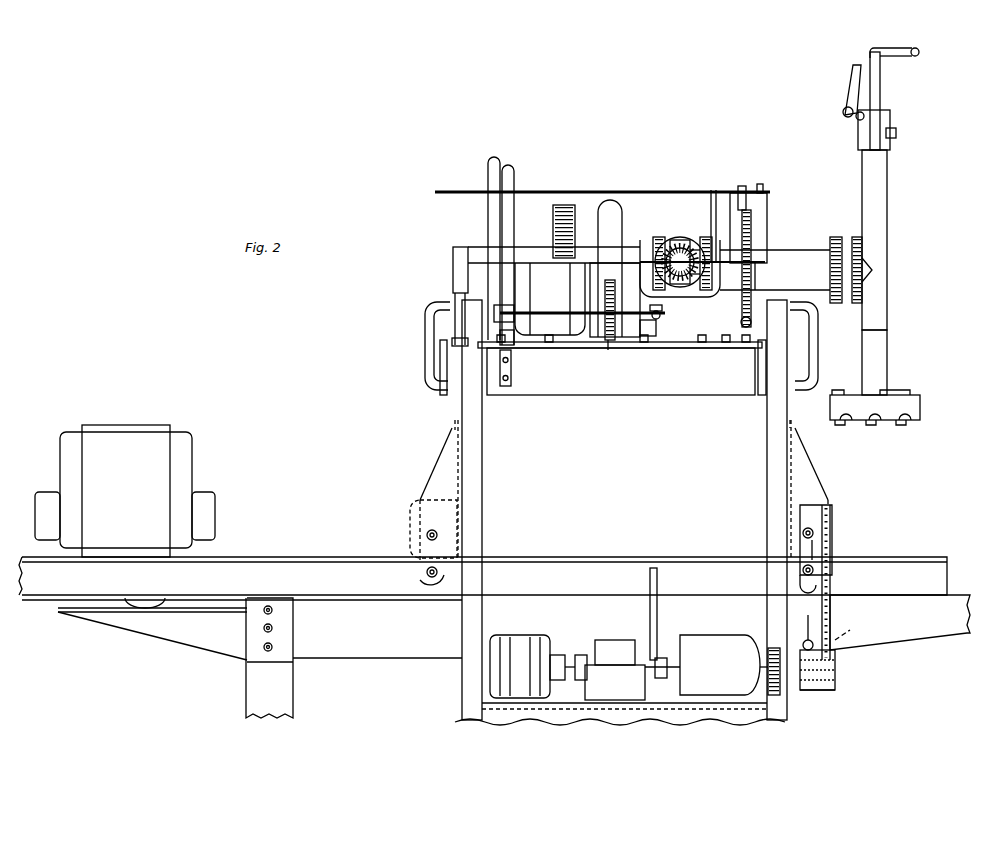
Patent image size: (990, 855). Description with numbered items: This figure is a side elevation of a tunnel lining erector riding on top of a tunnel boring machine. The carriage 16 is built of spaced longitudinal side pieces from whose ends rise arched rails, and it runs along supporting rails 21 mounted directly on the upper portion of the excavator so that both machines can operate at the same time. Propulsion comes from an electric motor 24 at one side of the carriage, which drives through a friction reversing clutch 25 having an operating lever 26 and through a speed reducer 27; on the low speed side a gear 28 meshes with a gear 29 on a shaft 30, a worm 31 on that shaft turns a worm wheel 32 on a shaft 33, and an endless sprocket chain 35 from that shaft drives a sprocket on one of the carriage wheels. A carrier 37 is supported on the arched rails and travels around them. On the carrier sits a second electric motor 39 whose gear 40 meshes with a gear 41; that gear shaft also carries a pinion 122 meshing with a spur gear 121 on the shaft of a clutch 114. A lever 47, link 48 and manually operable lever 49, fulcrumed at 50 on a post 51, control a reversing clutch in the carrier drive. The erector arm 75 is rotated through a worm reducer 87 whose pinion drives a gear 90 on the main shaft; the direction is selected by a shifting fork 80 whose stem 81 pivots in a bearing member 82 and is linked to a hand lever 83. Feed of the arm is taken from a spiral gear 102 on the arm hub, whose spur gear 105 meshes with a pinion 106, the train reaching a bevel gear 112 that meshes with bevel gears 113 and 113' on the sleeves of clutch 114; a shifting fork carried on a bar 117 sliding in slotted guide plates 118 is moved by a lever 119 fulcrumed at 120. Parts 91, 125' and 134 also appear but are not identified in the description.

The carriage 16 is at (508, 720).
The supporting rail 21 is at (542, 566).
The electric motor 24 is at (528, 640).
The friction reversing clutch 25 is at (615, 648).
The operating lever 26 is at (658, 581).
The speed reducer 27 is at (703, 640).
The gear 28 is at (768, 680).
The gear 29 is at (774, 697).
The shaft 30 is at (828, 692).
The worm 31 is at (836, 668).
The worm wheel 32 is at (852, 630).
The shaft 33 is at (810, 624).
The endless sprocket chain 35 is at (832, 550).
The carrier or platform 37 is at (621, 371).
The second electric motor 39 is at (550, 299).
The gear 40 is at (615, 300).
The gear 41 is at (610, 351).
The pivotally mounted lever 47 is at (714, 190).
The link 48 is at (738, 187).
The manually operable lever 49 is at (670, 188).
The fulcrum 50 is at (770, 178).
The support or post 51 is at (767, 203).
The erector arm 75 is at (887, 318).
The shifting fork 80 is at (512, 358).
The stem 81 is at (665, 313).
The bearing member 82 is at (649, 328).
The manually operable lever 83 is at (514, 213).
The worm reducer 87 is at (610, 232).
The gear 90 is at (566, 205).
The column 91 is at (887, 160).
The spiral gear 102 is at (862, 238).
The spur gear 105 is at (850, 238).
The pinion 106 is at (832, 240).
The bevel gear 112 is at (697, 240).
The bevel gear 113 is at (652, 252).
The bevel gear 113' is at (717, 260).
The clutch 114 is at (680, 248).
The bar 117 is at (608, 278).
The slotted guide plate 118 is at (702, 275).
The manually operable lever 119 is at (488, 213).
The fulcrum 120 is at (471, 296).
The spur gear 121 is at (751, 222).
The pinion 122 is at (740, 322).
The handle 125' is at (892, 99).
The latch lever 134 is at (852, 74).